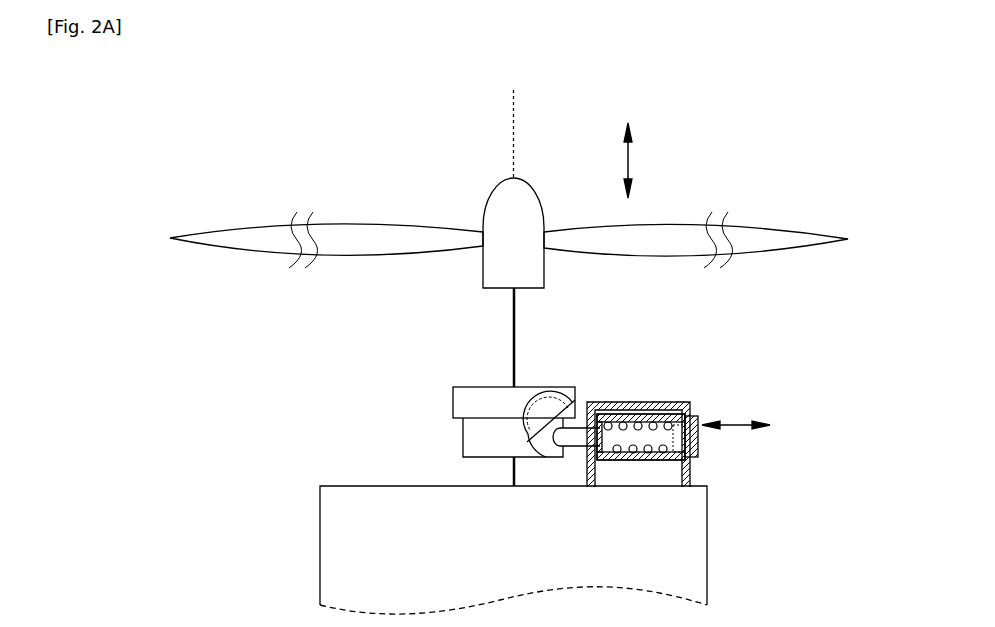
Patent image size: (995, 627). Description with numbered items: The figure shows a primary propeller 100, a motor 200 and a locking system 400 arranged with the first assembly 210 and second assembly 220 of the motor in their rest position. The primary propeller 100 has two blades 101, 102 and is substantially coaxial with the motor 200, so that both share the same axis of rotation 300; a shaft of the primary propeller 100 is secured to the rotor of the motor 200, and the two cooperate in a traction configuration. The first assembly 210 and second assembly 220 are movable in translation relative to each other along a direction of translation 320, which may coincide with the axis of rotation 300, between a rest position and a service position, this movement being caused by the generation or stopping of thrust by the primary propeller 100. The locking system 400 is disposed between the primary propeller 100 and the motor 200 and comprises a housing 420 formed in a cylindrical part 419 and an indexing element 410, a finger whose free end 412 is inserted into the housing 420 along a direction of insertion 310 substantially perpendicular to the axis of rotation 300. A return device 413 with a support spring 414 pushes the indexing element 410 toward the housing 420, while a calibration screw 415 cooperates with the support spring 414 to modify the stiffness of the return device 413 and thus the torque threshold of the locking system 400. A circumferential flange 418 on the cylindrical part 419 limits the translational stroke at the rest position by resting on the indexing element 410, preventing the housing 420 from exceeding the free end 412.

The primary propeller 100 is at (346, 154).
The blade 101 is at (778, 230).
The blade 102 is at (248, 230).
The motor 200 is at (469, 452).
The first assembly 210 is at (509, 478).
The second assembly 220 is at (320, 541).
The axis of rotation 300 is at (516, 112).
The direction of insertion 310 is at (733, 415).
The direction of translation 320 is at (631, 160).
The locking system 400 is at (474, 400).
The indexing element 410 is at (644, 421).
The free end 412 is at (573, 448).
The return device 413 is at (633, 414).
The support spring 414 is at (638, 454).
The calibration screw 415 is at (698, 440).
The circumferential flange 418 is at (463, 427).
The cylindrical part 419 is at (467, 386).
The housing 420 is at (540, 410).